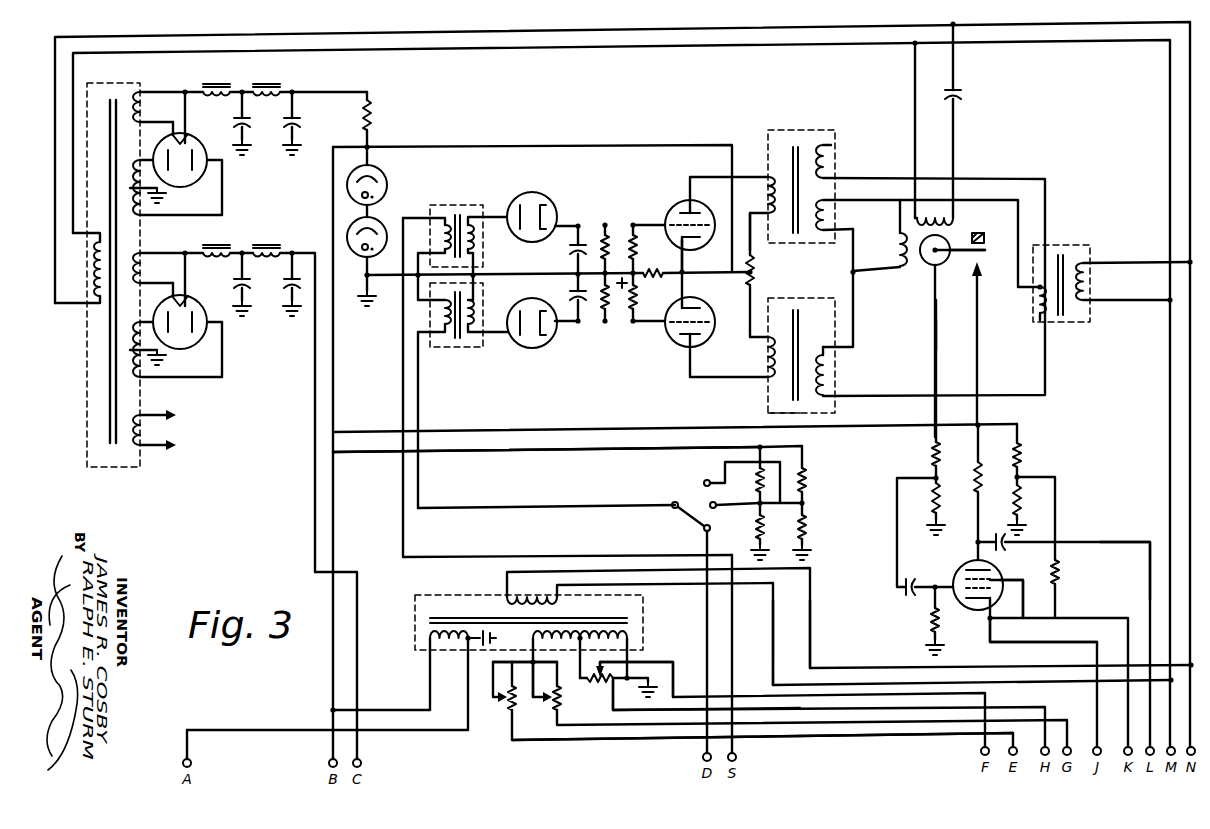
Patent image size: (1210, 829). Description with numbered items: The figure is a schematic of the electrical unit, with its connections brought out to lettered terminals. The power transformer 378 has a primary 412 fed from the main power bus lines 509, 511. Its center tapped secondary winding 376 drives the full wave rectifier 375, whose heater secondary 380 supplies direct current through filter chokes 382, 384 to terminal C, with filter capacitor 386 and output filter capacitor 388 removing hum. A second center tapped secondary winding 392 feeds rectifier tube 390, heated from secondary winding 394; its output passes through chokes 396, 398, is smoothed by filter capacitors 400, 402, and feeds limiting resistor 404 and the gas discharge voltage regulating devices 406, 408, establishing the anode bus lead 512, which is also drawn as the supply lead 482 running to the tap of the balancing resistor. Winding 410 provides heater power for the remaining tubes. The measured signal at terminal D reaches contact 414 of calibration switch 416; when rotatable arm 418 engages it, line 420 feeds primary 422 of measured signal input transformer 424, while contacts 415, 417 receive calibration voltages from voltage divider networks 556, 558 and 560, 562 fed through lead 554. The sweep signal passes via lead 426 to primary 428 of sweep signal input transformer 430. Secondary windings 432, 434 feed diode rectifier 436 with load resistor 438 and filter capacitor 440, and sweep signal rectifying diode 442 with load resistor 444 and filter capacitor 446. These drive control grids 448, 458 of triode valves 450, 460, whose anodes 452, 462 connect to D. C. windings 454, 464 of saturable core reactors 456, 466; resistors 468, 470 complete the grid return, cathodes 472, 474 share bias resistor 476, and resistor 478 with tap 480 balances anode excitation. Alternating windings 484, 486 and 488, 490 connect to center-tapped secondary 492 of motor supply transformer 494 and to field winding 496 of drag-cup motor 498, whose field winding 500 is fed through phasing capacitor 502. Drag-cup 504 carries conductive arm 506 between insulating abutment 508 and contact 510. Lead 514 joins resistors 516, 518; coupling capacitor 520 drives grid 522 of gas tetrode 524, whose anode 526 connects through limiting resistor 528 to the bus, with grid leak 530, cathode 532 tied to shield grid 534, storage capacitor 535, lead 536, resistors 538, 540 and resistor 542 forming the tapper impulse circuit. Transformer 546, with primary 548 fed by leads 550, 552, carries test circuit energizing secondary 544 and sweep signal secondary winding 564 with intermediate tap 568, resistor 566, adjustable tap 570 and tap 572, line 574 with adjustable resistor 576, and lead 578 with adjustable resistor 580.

The full wave rectifier 375 is at (195, 346).
The center tapped secondary winding 376 is at (143, 379).
The power transformer 378 is at (87, 420).
The secondary 380 is at (142, 256).
The filter choke 382 is at (229, 249).
The filter choke 384 is at (281, 249).
The filter capacitor 386 is at (239, 284).
The output filter capacitor 388 is at (289, 284).
The full wave rectifier tube 390 is at (187, 186).
The center tapped secondary winding 392 is at (146, 214).
The secondary winding 394 is at (134, 100).
The choke 396 is at (229, 88).
The choke 398 is at (281, 88).
The filter capacitor 400 is at (296, 120).
The filter capacitor 402 is at (238, 117).
The limiting resistor 404 is at (372, 112).
The cold cathode gas discharge voltage regulating device 406 is at (386, 178).
The cold cathode gas discharge voltage regulating device 408 is at (386, 230).
The winding 410 is at (147, 436).
The primary 412 is at (90, 300).
The contact 414 is at (704, 531).
The contact 415 is at (704, 481).
The calibration switch 416 is at (680, 498).
The contact 417 is at (716, 507).
The rotatable arm 418 is at (688, 516).
The line 420 is at (528, 507).
The primary 422 is at (441, 314).
The measured signal input transformer 424 is at (455, 347).
The lead 426 is at (402, 521).
The primary 428 is at (441, 236).
The sweep signal input transformer 430 is at (455, 205).
The secondary winding 432 is at (482, 309).
The secondary winding 434 is at (482, 241).
The diode rectifier 436 is at (532, 348).
The load resistor 438 is at (604, 316).
The filter capacitor 440 is at (571, 297).
The sweep signal rectifying diode 442 is at (532, 192).
The load resistor 444 is at (603, 232).
The filter capacitor 446 is at (571, 252).
The control grid 448 is at (713, 320).
The triode valve 450 is at (701, 335).
The anode 452 is at (677, 342).
The D. C. winding 454 is at (770, 358).
The saturable core reactor 456 is at (768, 405).
The control grid 458 is at (697, 240).
The triode thermionic valve 460 is at (698, 205).
The anode 462 is at (680, 212).
The D. C. control winding 464 is at (766, 197).
The saturable core reactor 466 is at (795, 130).
The resistor 468 is at (634, 314).
The resistor 470 is at (633, 234).
The cathode 472 is at (696, 307).
The cathode 474 is at (684, 272).
The bias resistor 476 is at (653, 270).
The resistor 478 is at (758, 270).
The tap 480 is at (750, 262).
The supply conductor 482 is at (560, 146).
The alternating winding 484 is at (826, 378).
The alternating winding 486 is at (800, 298).
The alternating current winding 488 is at (826, 216).
The alternating current winding 490 is at (826, 162).
The center-tapped secondary 492 is at (1038, 312).
The motor supply transformer 494 is at (1063, 245).
The field winding 496 is at (898, 250).
The drag-cup motor 498 is at (893, 295).
The field winding 500 is at (955, 217).
The phasing capacitor 502 is at (962, 96).
The drag-cup 504 is at (938, 270).
The conductive arm 506 is at (985, 252).
The fixed insulating abutment 508 is at (978, 233).
The main power bus line 509 is at (1170, 181).
The contact 510 is at (980, 280).
The main power bus line 511 is at (1190, 153).
The anode bus lead 512 is at (334, 383).
The lead 514 is at (934, 336).
The resistor 516 is at (932, 455).
The resistor 518 is at (931, 498).
The coupling capacitor 520 is at (897, 585).
The grid 522 is at (1024, 598).
The gas tetrode 524 is at (984, 600).
The anode 526 is at (970, 567).
The limiting resistor 528 is at (975, 478).
The grid leak 530 is at (930, 620).
The cathode 532 is at (988, 630).
The shield grid 534 is at (958, 578).
The storage capacitor 535 is at (1004, 547).
The lead 536 is at (1150, 541).
The resistor 538 is at (1022, 500).
The resistor 540 is at (1022, 452).
The resistor 542 is at (1060, 575).
The test circuit energizing secondary 544 is at (445, 640).
The transformer 546 is at (415, 622).
The primary 548 is at (515, 598).
The lead 550 is at (773, 645).
The lead 552 is at (810, 645).
The lead 554 is at (508, 449).
The voltage divider resistance 556 is at (806, 475).
The voltage divider resistance 558 is at (806, 522).
The voltage divider resistance 560 is at (757, 478).
The voltage divider resistance 562 is at (757, 530).
The sweep signal secondary winding 564 is at (627, 632).
The resistor 566 is at (606, 684).
The intermediate tap 568 is at (536, 663).
The adjustable tap 570 is at (600, 668).
The tap 572 is at (611, 708).
The line 574 is at (590, 741).
The adjustable resistor 576 is at (511, 712).
The lead 578 is at (866, 736).
The adjustable resistor 580 is at (556, 712).